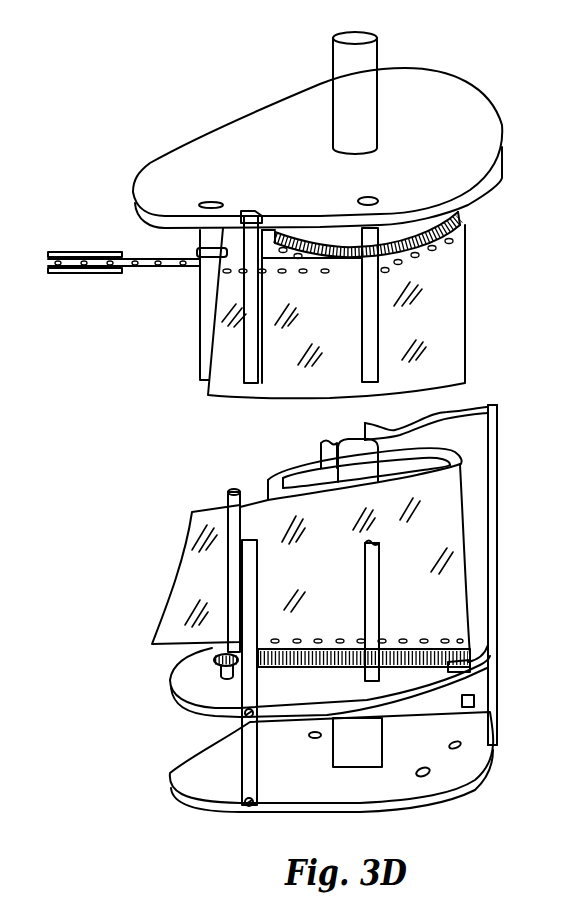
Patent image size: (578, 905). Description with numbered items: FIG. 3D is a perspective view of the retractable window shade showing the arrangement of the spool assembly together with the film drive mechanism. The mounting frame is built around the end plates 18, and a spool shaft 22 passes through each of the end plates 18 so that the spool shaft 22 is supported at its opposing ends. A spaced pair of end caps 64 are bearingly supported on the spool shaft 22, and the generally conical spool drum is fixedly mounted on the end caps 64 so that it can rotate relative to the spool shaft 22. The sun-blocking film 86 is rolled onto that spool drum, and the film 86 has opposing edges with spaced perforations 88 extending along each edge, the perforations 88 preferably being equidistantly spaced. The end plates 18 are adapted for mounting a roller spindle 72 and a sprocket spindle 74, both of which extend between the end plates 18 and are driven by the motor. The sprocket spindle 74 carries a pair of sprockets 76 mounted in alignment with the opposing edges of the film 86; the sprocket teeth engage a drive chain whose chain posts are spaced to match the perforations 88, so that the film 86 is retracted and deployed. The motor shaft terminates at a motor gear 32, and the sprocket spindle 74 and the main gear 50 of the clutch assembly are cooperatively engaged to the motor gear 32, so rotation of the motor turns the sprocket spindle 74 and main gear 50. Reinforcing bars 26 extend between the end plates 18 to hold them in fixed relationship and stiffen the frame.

The end plate 18 is at (317, 440).
The spool shaft 22 is at (368, 117).
The reinforcing bar 26 is at (257, 370).
The motor gear 32 is at (257, 665).
The main gear 50 is at (472, 658).
The end cap 64 is at (462, 216).
The roller spindle 72 is at (379, 368).
The sprocket spindle 74 is at (203, 305).
The sprocket 76 is at (197, 252).
The film 86 is at (236, 352).
The perforation 88 is at (388, 270).